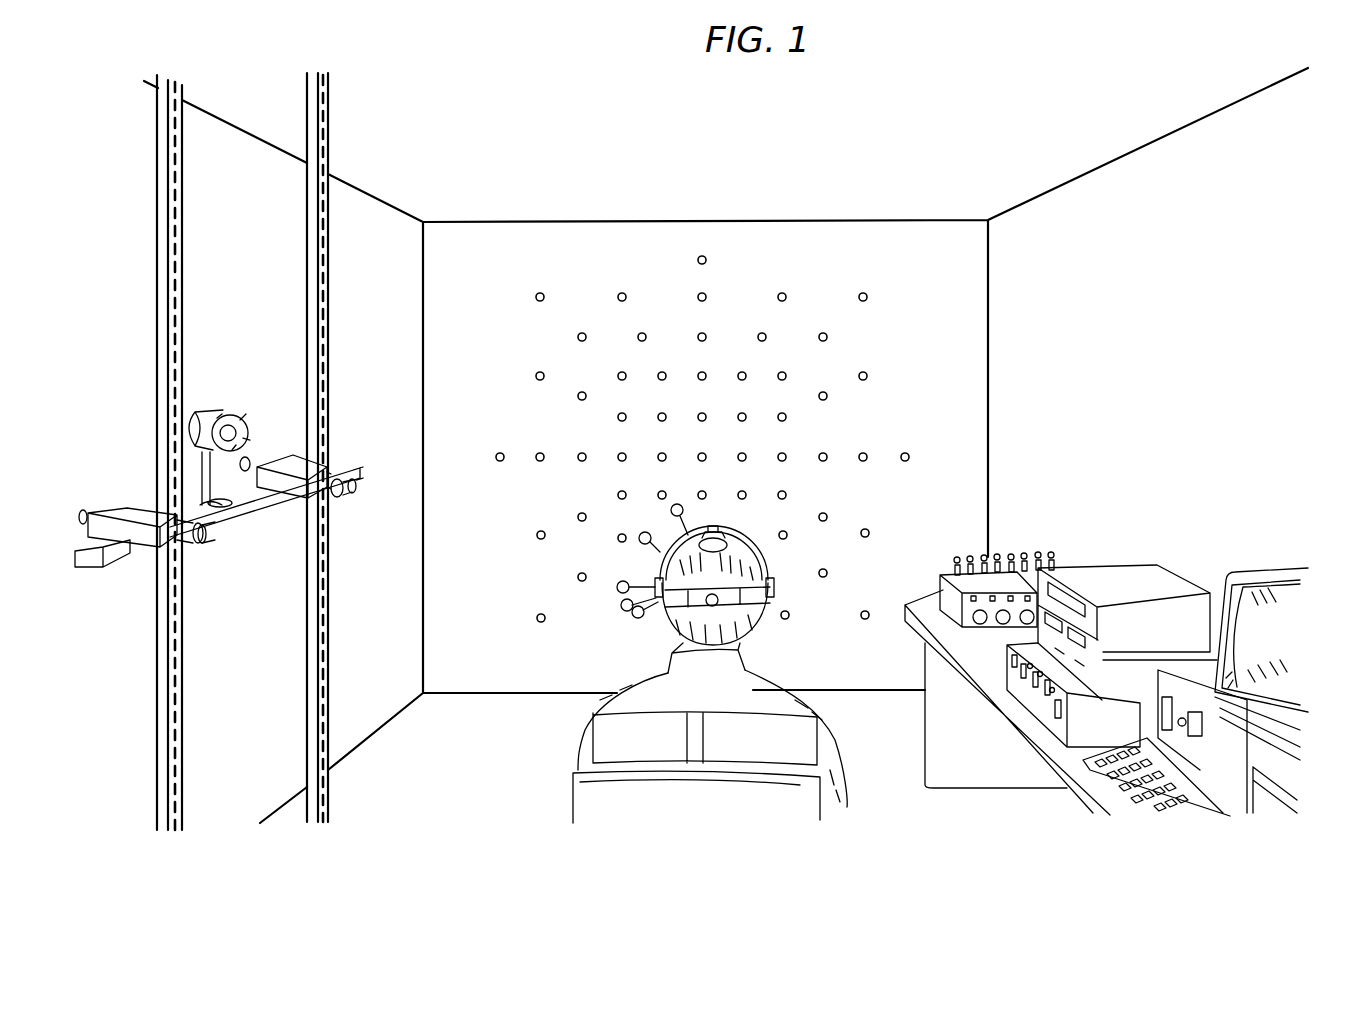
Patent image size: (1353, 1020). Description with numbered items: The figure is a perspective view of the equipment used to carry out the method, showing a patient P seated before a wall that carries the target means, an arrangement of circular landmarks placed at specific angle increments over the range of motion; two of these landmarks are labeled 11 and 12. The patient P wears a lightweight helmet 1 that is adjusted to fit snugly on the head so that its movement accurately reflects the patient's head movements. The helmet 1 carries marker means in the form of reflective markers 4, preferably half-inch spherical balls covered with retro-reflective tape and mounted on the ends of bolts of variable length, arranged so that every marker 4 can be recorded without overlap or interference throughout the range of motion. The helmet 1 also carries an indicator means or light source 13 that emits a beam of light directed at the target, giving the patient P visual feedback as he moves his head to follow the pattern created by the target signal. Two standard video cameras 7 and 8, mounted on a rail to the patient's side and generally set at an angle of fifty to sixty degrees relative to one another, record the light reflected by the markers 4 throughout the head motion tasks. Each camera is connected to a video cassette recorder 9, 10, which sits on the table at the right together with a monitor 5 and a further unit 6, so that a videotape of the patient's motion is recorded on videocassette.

The helmet 1 is at (767, 600).
The marker 4 is at (660, 550).
The monitor 5 is at (1258, 600).
The control unit 6 is at (1023, 560).
The video camera 7 is at (129, 512).
The video camera 8 is at (288, 457).
The video cassette recorder 9 is at (1083, 590).
The video cassette recorder 10 is at (1007, 690).
The target point 11 is at (872, 294).
The target point 12 is at (870, 377).
The light source 13 is at (727, 538).
The patient P is at (753, 690).